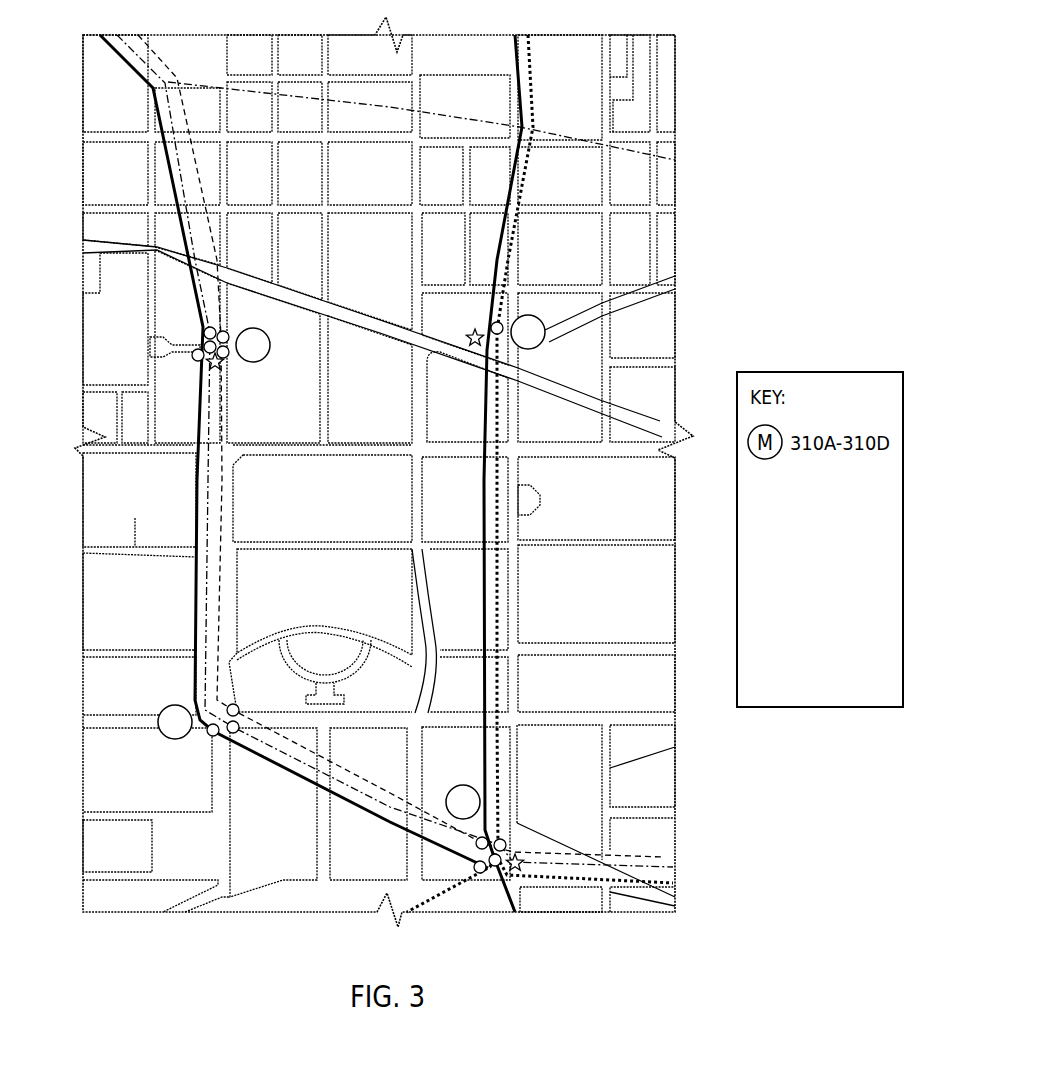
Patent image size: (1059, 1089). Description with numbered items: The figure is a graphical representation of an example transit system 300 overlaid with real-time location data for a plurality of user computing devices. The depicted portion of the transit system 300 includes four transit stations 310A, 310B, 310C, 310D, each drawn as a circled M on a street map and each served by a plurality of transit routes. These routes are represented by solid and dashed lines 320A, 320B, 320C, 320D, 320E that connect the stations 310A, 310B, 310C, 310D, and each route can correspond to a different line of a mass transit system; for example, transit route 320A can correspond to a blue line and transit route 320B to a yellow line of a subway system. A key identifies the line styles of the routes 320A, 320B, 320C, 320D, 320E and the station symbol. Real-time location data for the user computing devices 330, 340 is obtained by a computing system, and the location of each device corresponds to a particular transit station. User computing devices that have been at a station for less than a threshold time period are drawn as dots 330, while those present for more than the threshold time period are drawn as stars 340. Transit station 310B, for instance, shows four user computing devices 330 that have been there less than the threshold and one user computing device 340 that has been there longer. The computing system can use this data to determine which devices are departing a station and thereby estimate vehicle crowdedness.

The transit system 300 is at (727, 87).
The transit station 310A is at (542, 320).
The transit station 310B is at (458, 785).
The transit station 310C is at (166, 739).
The transit station 310D is at (246, 332).
The transit route 320A is at (750, 484).
The transit route 320B is at (750, 517).
The transit route 320C is at (750, 548).
The transit route 320D is at (750, 578).
The transit route 320E is at (750, 610).
The user computing device 330 is at (514, 597).
The user computing device 340 is at (521, 599).